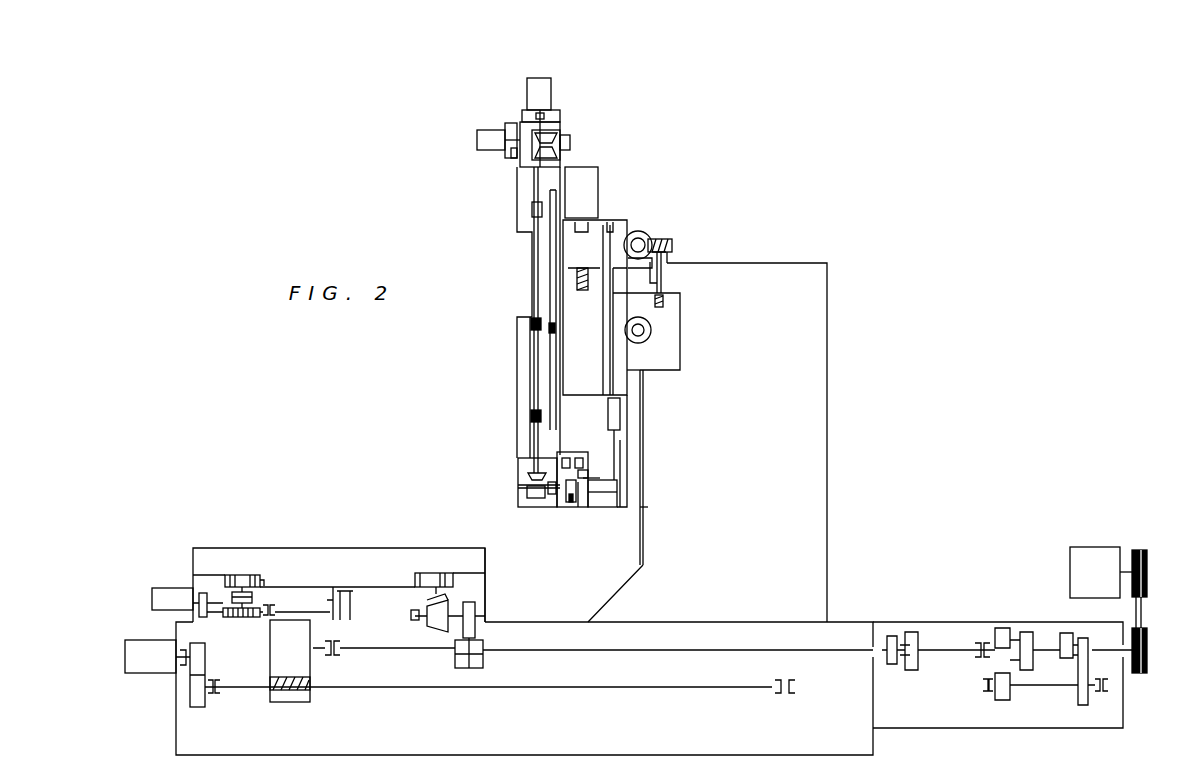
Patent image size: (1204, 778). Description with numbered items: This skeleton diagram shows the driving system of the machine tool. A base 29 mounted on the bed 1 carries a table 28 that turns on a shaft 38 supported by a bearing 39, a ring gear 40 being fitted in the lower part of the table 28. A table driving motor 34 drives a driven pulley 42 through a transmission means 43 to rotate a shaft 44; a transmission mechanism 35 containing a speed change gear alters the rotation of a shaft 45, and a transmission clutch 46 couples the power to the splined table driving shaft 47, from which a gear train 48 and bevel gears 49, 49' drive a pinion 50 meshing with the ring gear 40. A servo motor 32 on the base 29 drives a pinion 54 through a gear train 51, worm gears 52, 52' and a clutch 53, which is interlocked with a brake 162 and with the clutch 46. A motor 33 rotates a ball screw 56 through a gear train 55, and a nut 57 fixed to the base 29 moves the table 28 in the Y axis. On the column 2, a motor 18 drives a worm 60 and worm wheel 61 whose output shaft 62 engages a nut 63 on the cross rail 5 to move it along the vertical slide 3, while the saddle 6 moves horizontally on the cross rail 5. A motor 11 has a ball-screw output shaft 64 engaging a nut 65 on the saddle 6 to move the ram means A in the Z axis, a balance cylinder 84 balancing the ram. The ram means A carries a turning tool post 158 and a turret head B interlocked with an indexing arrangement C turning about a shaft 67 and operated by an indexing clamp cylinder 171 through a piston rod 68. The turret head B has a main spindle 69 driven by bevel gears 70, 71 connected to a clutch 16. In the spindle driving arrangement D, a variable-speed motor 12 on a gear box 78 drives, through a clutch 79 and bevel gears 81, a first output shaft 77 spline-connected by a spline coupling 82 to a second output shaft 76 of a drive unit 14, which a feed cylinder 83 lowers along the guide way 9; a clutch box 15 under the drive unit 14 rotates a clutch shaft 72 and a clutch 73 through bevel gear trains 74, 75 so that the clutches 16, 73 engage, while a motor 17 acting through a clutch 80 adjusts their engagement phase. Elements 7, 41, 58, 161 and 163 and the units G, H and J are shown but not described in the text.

The bed 1 is at (690, 755).
The column 2 is at (827, 432).
The vertical slide 3 is at (641, 475).
The cross rail 5 is at (658, 370).
The saddle 6 is at (576, 385).
The rod 7 is at (620, 470).
The guide way 9 is at (571, 502).
The motor for movement in the direction of Z axis 11 is at (598, 185).
The variable-speed motor 12 is at (540, 80).
The drive unit 14 is at (517, 353).
The clutch box 15 is at (518, 462).
The clutch 16 is at (552, 494).
The motor 17 is at (490, 130).
The motor 18 is at (651, 236).
The table 28 is at (368, 548).
The base 29 is at (485, 580).
The servo motor 32 is at (172, 588).
The motor for movement in Y axis 33 is at (130, 640).
The table driving motor 34 is at (1100, 547).
The transmission mechanism 35 is at (1010, 728).
The shaft 38 is at (345, 605).
The bearing 39 is at (333, 605).
The ring gear 40 is at (262, 582).
The pulley 41 is at (1147, 566).
The driven pulley 42 is at (1147, 655).
The transmission means 43 is at (1141, 612).
The shaft 44 is at (1128, 668).
The shaft 45 is at (958, 650).
The transmission clutch 46 is at (905, 668).
The table driving shaft 47 is at (652, 648).
The gear train 48 is at (478, 605).
The bevel gear 49 is at (428, 624).
The bevel gear 49' is at (412, 581).
The pinion 50 is at (445, 575).
The gear train 51 is at (204, 593).
The worm gear 52 is at (276, 627).
The worm gear 52' is at (290, 659).
The clutch 53 is at (253, 597).
The pinion 54 is at (245, 577).
The gear train 55 is at (200, 655).
The ball screw 56 is at (430, 688).
The nut 57 is at (310, 690).
The coupling 58 is at (481, 666).
The worm 60 is at (645, 240).
The worm wheel 61 is at (672, 245).
The output shaft 62 is at (680, 366).
The nut 63 is at (680, 295).
The output shaft 64 is at (587, 270).
The nut 65 is at (592, 291).
The shaft 67 is at (605, 507).
The piston rod 68 is at (614, 447).
The main spindle 69 is at (585, 479).
The bevel gear 70 is at (588, 468).
The bevel gear 71 is at (578, 507).
The clutch shaft 72 is at (536, 498).
The clutch 73 is at (570, 455).
The bevel gear train 74 is at (520, 488).
The bevel gear train 75 is at (528, 476).
The second output shaft 76 is at (534, 435).
The first output shaft 77 is at (552, 282).
The gear box 78 is at (517, 216).
The clutch 79 is at (545, 115).
The clutch 80 is at (513, 153).
The bevel gears 81 is at (555, 135).
The spline coupling 82 is at (533, 320).
The feed cylinder 83 is at (538, 243).
The balance cylinder 84 is at (610, 343).
The turning tool post 158 is at (645, 510).
The sensor 161 is at (570, 142).
The brake 162 is at (412, 613).
The sensor 163 is at (508, 125).
The indexing clamp cylinder 171 is at (620, 413).
The ram means A is at (618, 210).
The turret head B is at (577, 507).
The indexing arrangement C is at (635, 495).
The turret head main spindle driving arrangement D is at (522, 122).
The unit G is at (1066, 555).
The unit H is at (144, 597).
The unit J is at (119, 664).